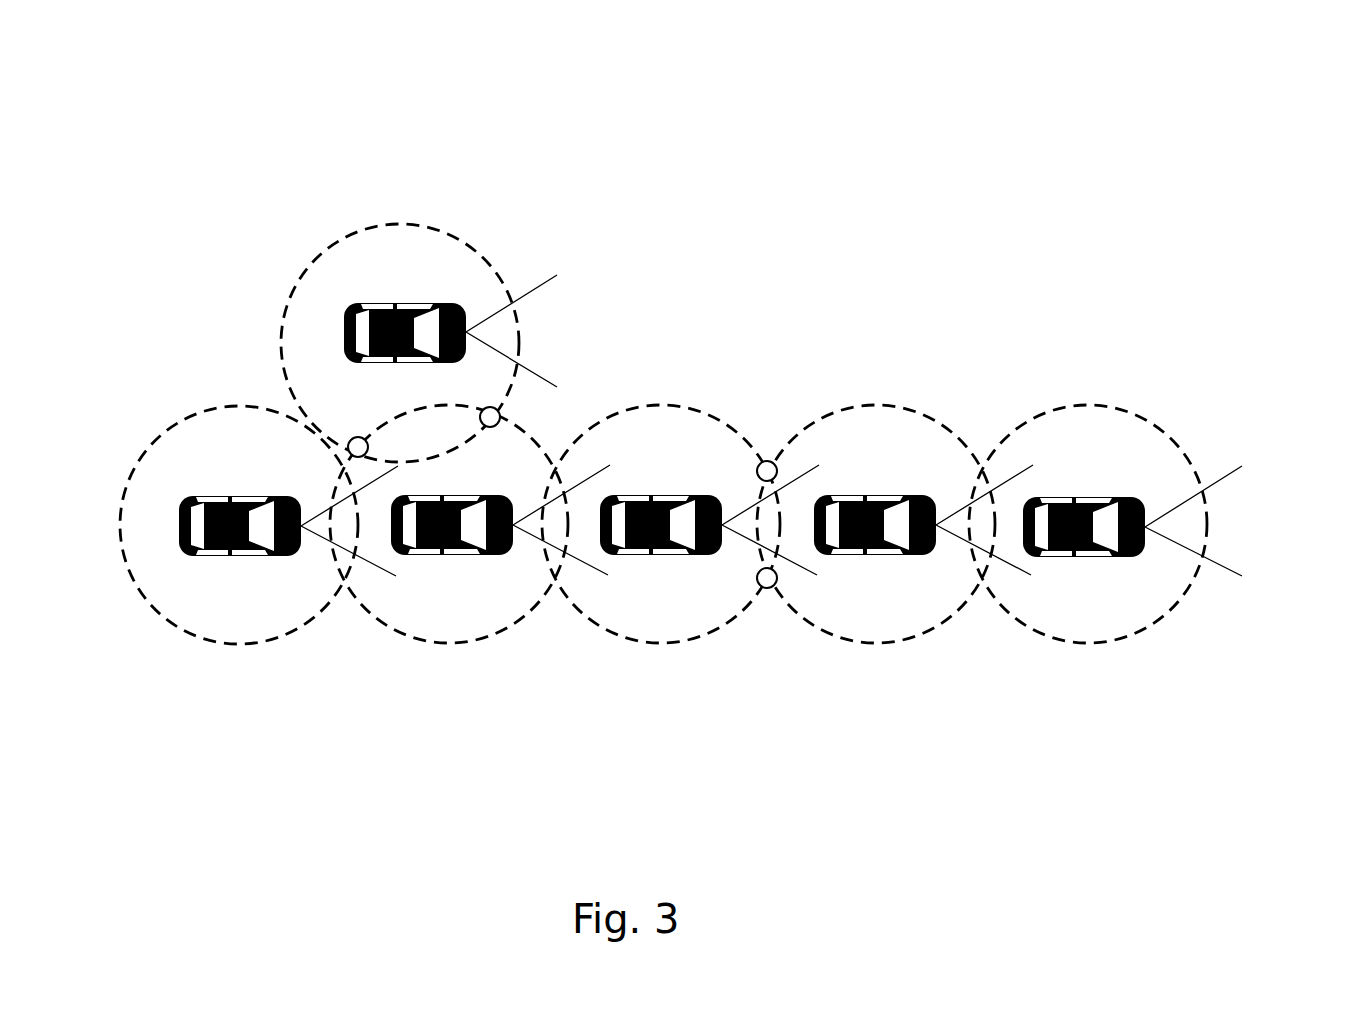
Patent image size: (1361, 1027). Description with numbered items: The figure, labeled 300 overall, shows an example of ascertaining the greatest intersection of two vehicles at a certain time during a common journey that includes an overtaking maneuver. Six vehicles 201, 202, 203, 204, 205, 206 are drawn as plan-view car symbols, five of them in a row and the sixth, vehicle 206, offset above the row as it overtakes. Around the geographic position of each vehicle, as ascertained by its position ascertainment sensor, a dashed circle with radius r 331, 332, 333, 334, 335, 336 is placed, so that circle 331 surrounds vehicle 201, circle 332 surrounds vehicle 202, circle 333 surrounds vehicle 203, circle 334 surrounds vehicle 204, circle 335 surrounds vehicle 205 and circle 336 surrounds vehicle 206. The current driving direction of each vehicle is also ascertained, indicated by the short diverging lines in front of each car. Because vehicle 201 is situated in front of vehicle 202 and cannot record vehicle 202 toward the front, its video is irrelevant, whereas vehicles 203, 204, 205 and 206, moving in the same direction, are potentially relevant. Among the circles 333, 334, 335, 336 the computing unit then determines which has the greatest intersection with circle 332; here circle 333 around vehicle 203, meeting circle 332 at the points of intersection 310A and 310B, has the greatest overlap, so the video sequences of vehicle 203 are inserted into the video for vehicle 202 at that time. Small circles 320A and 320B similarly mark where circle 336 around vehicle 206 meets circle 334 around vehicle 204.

The vehicle communication scenario 300 is at (1350, 48).
The vehicle 201 is at (1132, 545).
The vehicle 202 is at (923, 541).
The vehicle 203 is at (709, 544).
The vehicle 204 is at (500, 542).
The vehicle 205 is at (288, 541).
The vehicle 206 is at (450, 324).
The circle with radius r 331 is at (1130, 638).
The circle with radius r 332 is at (867, 641).
The circle with radius r 333 is at (647, 641).
The circle with radius r 334 is at (417, 639).
The circle with radius r 335 is at (210, 639).
The circle with radius r 336 is at (388, 224).
The point of intersection 310A is at (767, 589).
The point of intersection 310B is at (770, 462).
The intersection point of communication ranges 320A is at (357, 437).
The intersection point of communication ranges 320B is at (500, 413).